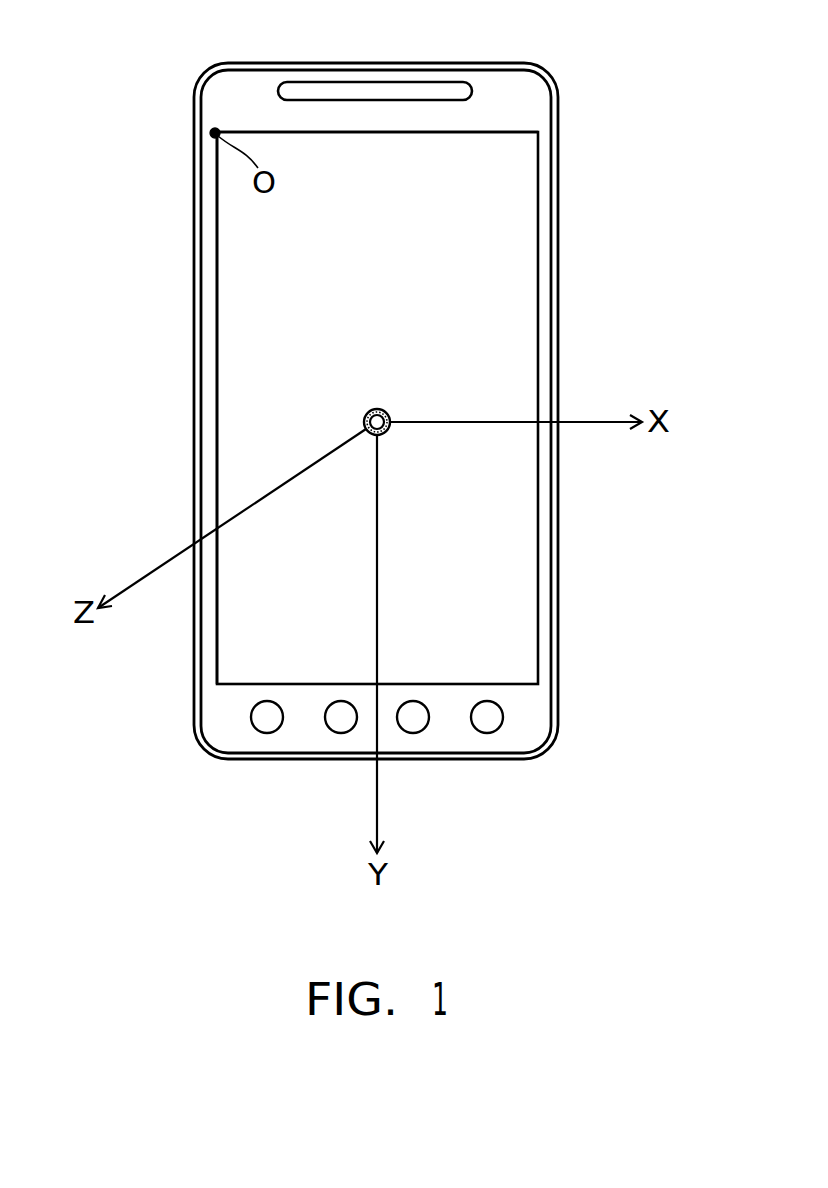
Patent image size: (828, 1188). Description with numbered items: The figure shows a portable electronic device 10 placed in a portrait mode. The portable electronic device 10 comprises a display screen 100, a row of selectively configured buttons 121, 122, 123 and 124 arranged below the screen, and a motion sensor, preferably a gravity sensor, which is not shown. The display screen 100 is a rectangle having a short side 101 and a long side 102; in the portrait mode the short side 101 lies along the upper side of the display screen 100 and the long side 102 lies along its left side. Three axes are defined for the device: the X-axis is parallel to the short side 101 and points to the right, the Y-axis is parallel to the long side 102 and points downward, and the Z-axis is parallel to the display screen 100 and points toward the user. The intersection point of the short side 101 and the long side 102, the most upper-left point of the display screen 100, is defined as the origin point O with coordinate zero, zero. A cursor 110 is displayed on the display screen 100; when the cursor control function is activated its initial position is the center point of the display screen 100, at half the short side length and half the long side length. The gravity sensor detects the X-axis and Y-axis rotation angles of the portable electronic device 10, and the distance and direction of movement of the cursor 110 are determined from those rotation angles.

The portable electronic device 10 is at (560, 102).
The display screen 100 is at (540, 195).
The short side 101 is at (450, 133).
The long side 102 is at (217, 308).
The cursor 110 is at (375, 408).
The button 121 is at (487, 733).
The button 122 is at (413, 733).
The button 123 is at (341, 733).
The button 124 is at (267, 733).